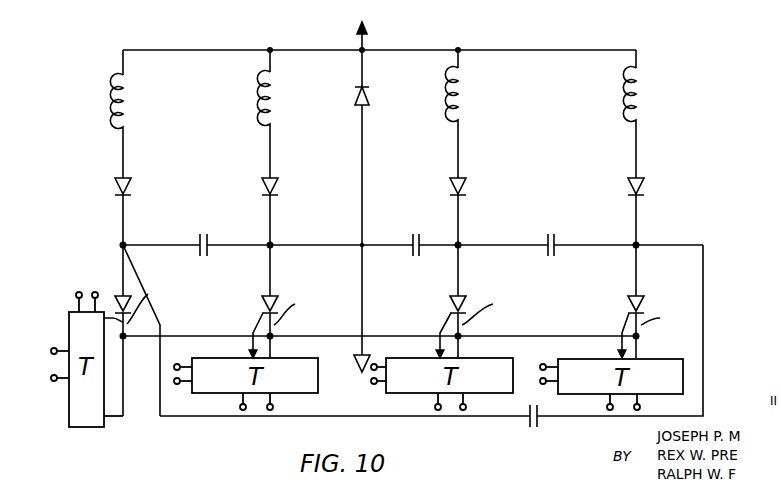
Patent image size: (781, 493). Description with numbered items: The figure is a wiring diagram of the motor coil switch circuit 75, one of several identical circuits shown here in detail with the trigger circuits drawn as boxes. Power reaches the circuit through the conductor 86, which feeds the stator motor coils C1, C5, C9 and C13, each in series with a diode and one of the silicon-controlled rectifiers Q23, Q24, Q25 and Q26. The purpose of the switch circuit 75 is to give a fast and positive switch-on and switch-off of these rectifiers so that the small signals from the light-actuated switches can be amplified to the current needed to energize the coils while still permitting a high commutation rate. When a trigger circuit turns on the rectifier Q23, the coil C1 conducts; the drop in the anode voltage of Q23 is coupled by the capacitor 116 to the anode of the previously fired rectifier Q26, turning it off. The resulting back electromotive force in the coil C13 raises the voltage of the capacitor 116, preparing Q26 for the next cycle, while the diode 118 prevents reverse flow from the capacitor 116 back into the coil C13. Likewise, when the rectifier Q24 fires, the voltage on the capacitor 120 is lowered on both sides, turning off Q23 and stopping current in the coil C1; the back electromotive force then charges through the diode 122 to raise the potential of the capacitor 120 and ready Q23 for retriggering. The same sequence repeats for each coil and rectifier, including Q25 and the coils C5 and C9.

The conductor 86 is at (392, 48).
The motor coil C1 is at (129, 107).
The motor coil C5 is at (276, 112).
The motor coil C9 is at (464, 98).
The motor coil C13 is at (642, 100).
The diode 122 is at (131, 187).
The capacitor 120 is at (209, 243).
The diode 118 is at (646, 186).
The motor coil switch circuit 75 is at (723, 203).
The capacitor 116 is at (538, 424).
The silicon-controlled rectifier Q23 is at (148, 294).
The silicon-controlled rectifier Q24 is at (302, 297).
The silicon-controlled rectifier Q25 is at (500, 297).
The silicon-controlled rectifier Q26 is at (656, 312).